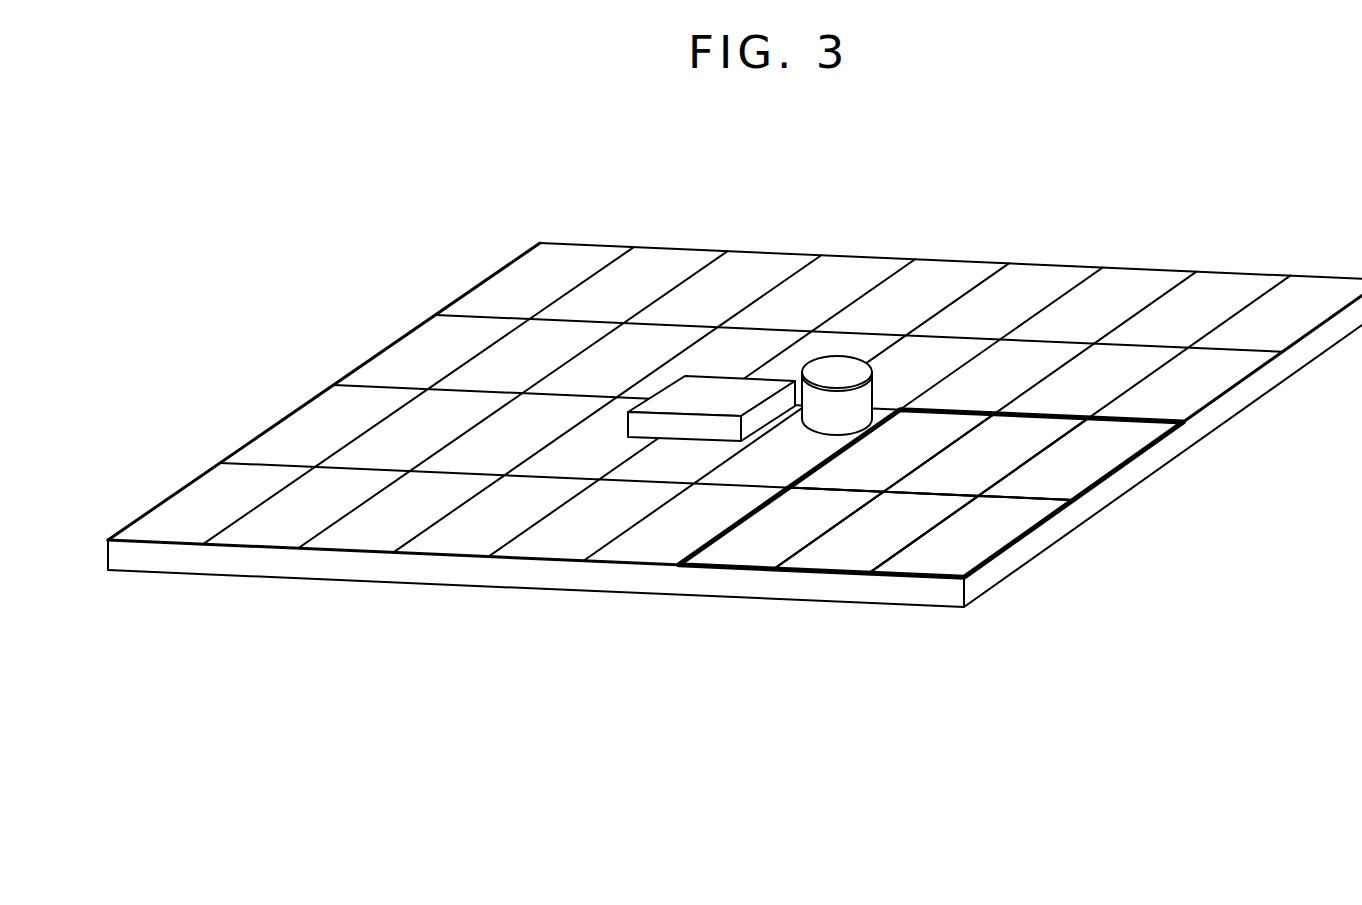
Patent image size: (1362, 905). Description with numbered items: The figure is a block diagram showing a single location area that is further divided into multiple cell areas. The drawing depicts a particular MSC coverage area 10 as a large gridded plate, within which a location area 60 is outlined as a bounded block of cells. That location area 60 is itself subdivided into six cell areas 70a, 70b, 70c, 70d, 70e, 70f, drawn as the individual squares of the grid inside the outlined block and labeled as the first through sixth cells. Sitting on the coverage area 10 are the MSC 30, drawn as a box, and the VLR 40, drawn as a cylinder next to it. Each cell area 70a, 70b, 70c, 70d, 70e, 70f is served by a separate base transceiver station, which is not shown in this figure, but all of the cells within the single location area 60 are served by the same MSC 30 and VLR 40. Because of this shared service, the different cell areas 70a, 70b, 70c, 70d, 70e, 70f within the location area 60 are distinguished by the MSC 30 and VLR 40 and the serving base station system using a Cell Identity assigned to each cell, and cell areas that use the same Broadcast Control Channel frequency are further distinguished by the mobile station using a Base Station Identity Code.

The MSC coverage area 10 is at (963, 258).
The MSC 30 is at (731, 367).
The VLR 40 is at (843, 347).
The location area 60 is at (1130, 475).
The cell area 70a is at (907, 440).
The cell area 70b is at (1022, 433).
The cell area 70c is at (1110, 438).
The cell area 70d is at (997, 517).
The cell area 70e is at (885, 515).
The cell area 70f is at (765, 521).